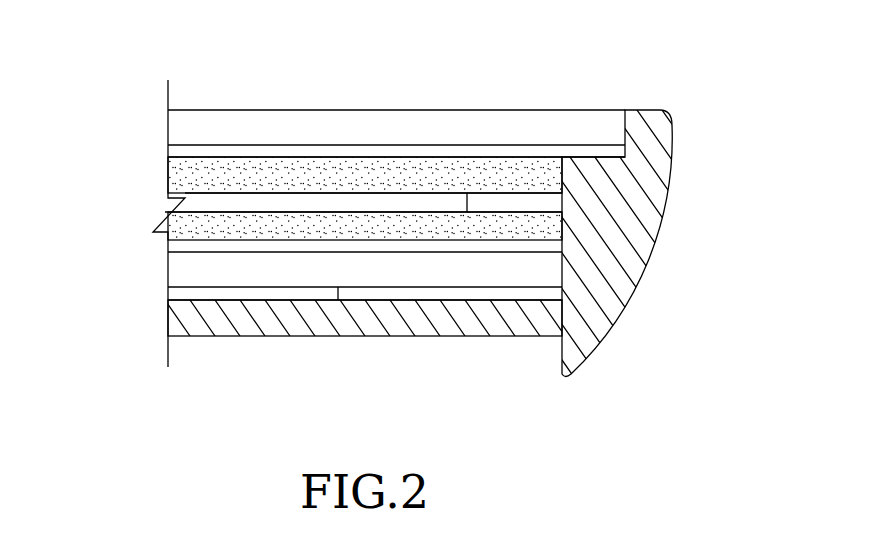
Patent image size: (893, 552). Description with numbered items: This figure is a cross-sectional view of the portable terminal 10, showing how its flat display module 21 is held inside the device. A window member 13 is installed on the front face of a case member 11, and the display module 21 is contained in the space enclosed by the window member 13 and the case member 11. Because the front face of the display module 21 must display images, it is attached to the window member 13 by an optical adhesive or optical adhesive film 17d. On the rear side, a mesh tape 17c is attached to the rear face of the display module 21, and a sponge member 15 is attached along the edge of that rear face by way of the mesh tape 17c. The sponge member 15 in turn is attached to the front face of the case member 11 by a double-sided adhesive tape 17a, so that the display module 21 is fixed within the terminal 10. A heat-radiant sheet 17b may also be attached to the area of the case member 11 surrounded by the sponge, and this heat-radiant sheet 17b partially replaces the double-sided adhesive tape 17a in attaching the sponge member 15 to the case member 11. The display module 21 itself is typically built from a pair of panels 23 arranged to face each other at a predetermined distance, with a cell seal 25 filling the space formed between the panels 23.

The portable terminal 10 is at (253, 51).
The case member 11 is at (597, 322).
The window member 13 is at (360, 110).
The sponge member 15 is at (177, 272).
The double-sided adhesive tape 17a is at (430, 295).
The heat-radiant sheet 17b is at (242, 295).
The mesh tape 17c is at (177, 245).
The optical adhesive film 17d is at (177, 151).
The flat display module 21 is at (477, 228).
The panels 23 is at (552, 178).
The cell seal 25 is at (550, 202).